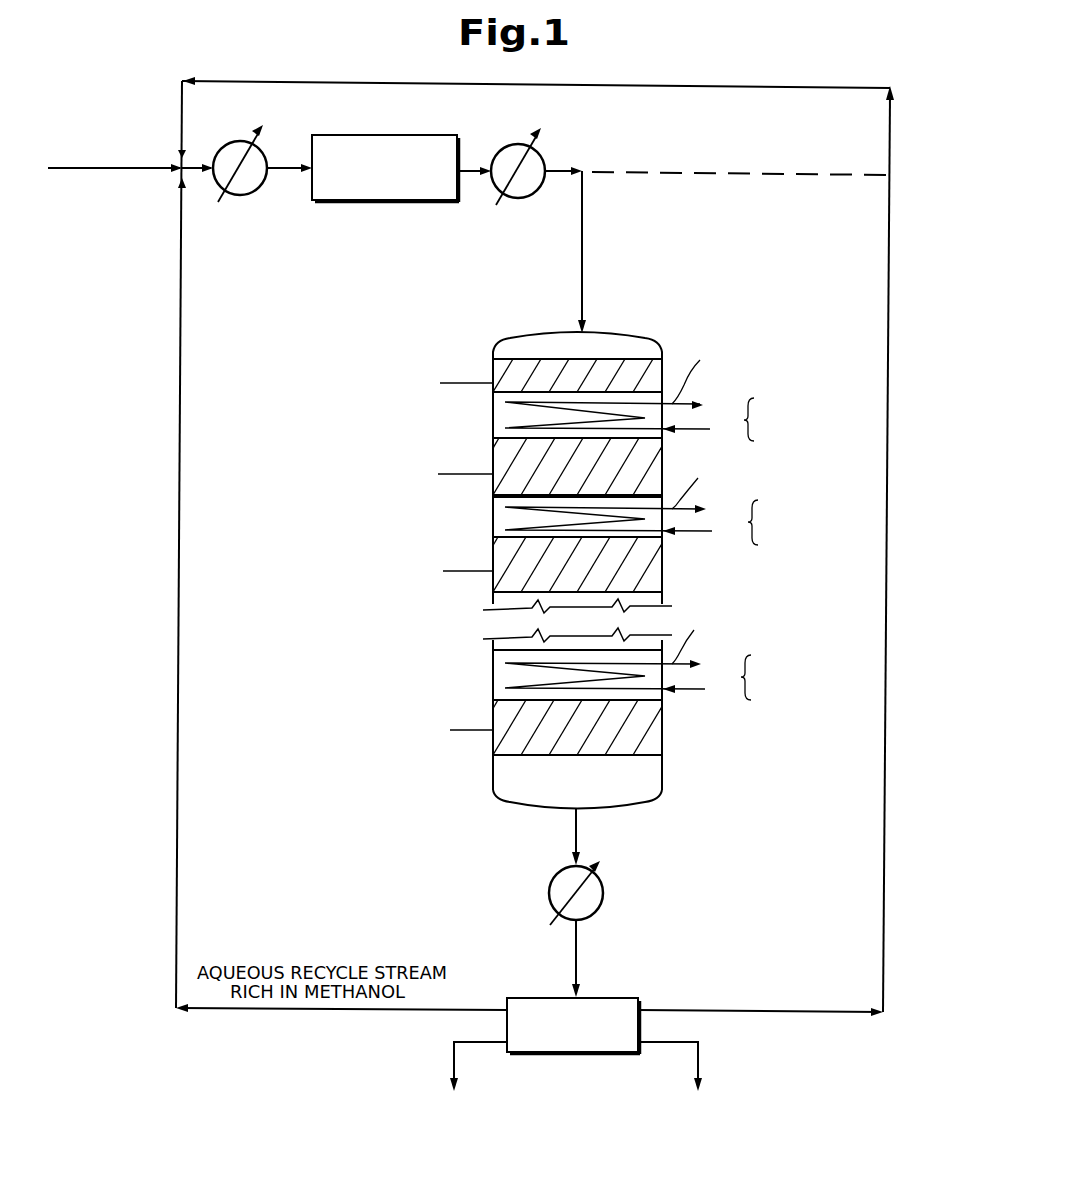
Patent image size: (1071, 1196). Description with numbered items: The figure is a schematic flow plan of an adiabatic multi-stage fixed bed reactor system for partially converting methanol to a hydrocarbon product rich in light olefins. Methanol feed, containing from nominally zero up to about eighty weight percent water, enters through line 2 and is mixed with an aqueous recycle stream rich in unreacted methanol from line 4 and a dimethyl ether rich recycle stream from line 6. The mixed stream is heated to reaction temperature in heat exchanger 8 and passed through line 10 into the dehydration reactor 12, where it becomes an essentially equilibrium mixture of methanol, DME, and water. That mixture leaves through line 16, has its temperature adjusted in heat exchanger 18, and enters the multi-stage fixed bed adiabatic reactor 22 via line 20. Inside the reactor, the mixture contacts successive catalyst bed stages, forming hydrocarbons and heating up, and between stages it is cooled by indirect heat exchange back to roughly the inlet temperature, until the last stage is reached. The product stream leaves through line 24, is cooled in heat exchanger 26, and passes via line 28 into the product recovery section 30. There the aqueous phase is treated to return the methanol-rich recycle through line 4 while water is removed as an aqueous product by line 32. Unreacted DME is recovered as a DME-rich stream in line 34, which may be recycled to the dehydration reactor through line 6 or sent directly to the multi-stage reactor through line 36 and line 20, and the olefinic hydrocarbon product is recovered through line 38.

The line 2 is at (113, 172).
The line 4 is at (181, 286).
The line 6 is at (476, 88).
The heat exchanger 8 is at (226, 143).
The line 10 is at (286, 172).
The dehydration reactor 12 is at (390, 135).
The line 16 is at (470, 175).
The heat exchanger 18 is at (533, 193).
The line 20 is at (563, 171).
The multi-stage fixed bed adiabatic reactor 22 is at (604, 333).
The line 24 is at (575, 834).
The heat exchanger 26 is at (549, 884).
The line 28 is at (577, 948).
The product recovery section 30 is at (603, 998).
The line 32 is at (454, 1042).
The line 34 is at (889, 230).
The line 36 is at (735, 175).
The line 38 is at (698, 1042).